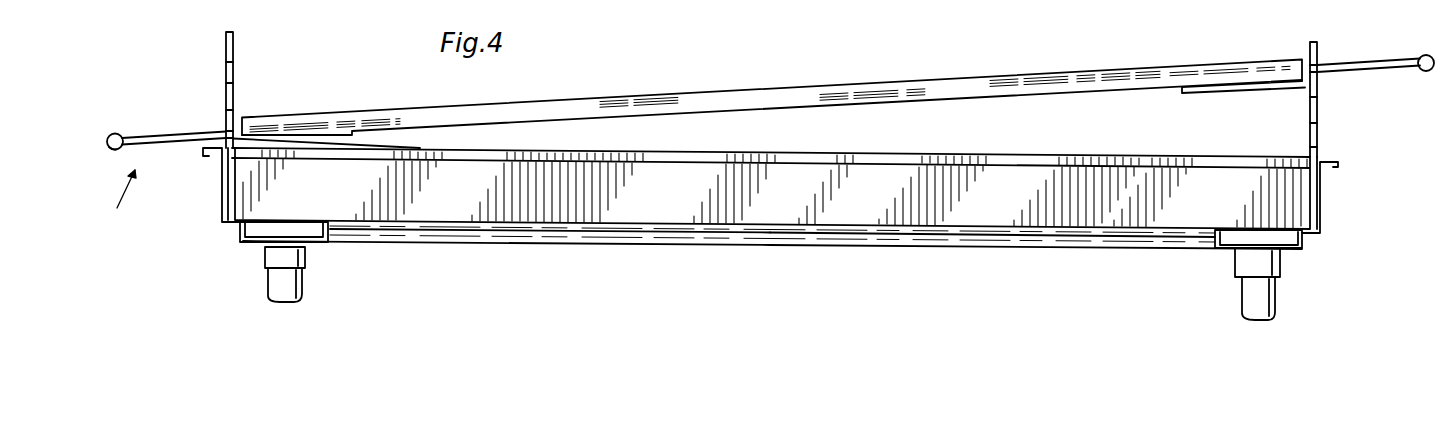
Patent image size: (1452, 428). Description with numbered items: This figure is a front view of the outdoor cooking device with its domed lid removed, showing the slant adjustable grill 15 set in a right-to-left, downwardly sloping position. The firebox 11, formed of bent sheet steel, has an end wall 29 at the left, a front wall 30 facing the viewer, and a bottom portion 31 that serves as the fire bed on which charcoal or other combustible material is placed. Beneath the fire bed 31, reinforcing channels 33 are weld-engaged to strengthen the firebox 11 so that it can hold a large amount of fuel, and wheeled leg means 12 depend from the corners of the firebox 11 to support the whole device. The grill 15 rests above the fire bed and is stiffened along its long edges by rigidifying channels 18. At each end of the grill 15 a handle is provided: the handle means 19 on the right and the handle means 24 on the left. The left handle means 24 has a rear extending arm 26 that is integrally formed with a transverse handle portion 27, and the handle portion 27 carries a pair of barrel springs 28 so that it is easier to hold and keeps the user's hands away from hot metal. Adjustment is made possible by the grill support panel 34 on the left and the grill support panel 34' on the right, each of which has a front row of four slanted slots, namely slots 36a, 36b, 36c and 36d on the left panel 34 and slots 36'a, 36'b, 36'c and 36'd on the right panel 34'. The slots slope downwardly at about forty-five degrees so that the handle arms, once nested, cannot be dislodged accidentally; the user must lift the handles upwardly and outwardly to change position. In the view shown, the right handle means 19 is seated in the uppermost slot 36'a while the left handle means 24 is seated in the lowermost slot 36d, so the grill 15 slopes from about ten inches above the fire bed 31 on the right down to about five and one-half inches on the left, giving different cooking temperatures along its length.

The firebox 11 is at (1283, 212).
The wheeled leg means 12 is at (300, 288).
The slant adjustable grill 15 is at (728, 90).
The rigidifying channels 18 is at (923, 92).
The handle means 19 is at (1420, 43).
The handle means 24 is at (106, 206).
The rear extending arm 26 is at (166, 144).
The transverse handle portion 27 is at (115, 150).
The barrel springs 28 is at (116, 133).
The end wall 29 is at (220, 200).
The front wall 30 is at (917, 206).
The bottom portion 31 is at (953, 230).
The reinforcing channels 33 is at (733, 237).
The grill support panel 34 is at (266, 74).
The grill support panel 34' is at (1279, 82).
The slanted slot 36a is at (231, 62).
The slanted slot 36b is at (231, 82).
The slanted slot 36c is at (231, 110).
The slanted slot 36d is at (230, 134).
The slanted slot 36'a is at (1359, 40).
The slanted slot 36'b is at (1267, 105).
The slanted slot 36'c is at (1361, 110).
The slanted slot 36'd is at (1274, 131).